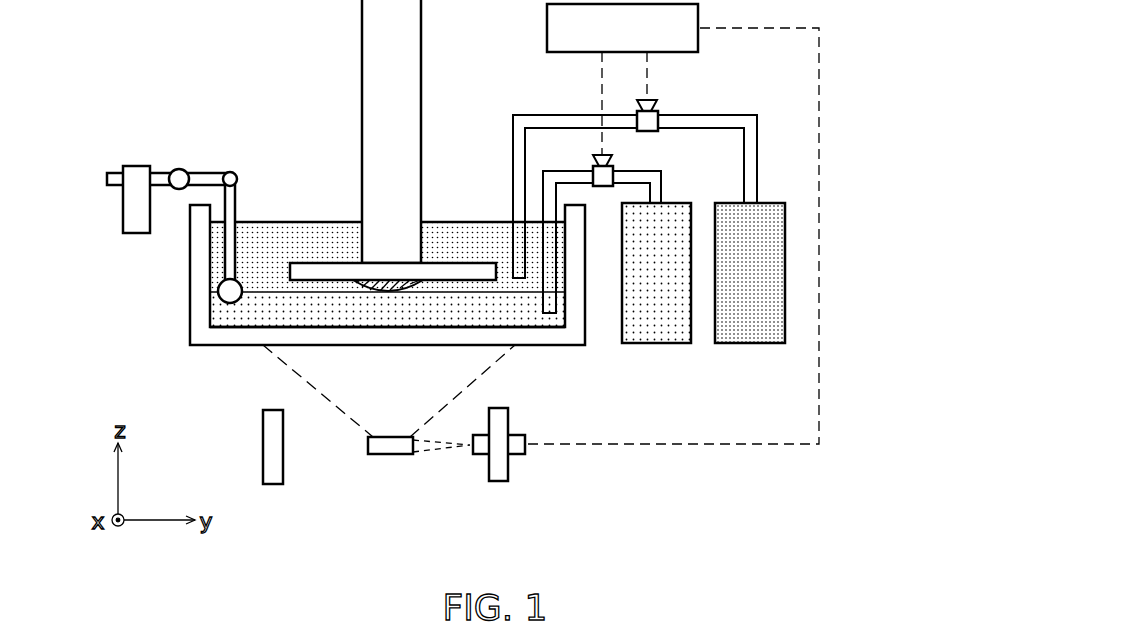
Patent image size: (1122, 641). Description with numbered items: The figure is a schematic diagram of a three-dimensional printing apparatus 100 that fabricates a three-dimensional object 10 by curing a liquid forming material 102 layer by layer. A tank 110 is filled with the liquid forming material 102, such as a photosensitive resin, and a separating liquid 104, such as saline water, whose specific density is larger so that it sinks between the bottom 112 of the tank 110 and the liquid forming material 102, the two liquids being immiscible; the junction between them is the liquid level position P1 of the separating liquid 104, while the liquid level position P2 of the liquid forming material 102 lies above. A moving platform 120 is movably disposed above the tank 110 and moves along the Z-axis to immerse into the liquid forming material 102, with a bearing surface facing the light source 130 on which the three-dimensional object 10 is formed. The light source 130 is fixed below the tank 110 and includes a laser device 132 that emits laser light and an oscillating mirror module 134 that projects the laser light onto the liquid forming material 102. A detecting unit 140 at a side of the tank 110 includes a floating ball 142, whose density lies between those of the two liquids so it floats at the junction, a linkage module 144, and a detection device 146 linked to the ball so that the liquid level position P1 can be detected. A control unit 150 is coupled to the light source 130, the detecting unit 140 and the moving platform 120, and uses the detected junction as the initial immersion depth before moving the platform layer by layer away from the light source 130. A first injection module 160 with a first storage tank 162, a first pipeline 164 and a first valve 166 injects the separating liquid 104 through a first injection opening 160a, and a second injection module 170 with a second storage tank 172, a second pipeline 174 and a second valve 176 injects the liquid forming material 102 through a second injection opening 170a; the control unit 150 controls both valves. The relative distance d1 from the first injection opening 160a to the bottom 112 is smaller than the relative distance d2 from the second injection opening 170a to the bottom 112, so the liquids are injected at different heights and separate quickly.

The three-dimensional object 10 is at (383, 287).
The three-dimensional printing apparatus 100 is at (745, 570).
The liquid forming material 102 is at (305, 232).
The separating liquid 104 is at (258, 298).
The tank 110 is at (200, 320).
The bottom of the tank 112 is at (207, 340).
The moving platform 120 is at (362, 103).
The light source 130 is at (427, 452).
The laser device 132 is at (500, 476).
The oscillating mirror module 134 is at (395, 447).
The detecting unit 140 is at (153, 186).
The floating ball 142 is at (223, 287).
The linkage module 144 is at (204, 175).
The detection device 146 is at (126, 212).
The control unit 150 is at (698, 18).
The first injection module 160 is at (581, 277).
The first injection opening 160a is at (548, 309).
The first storage tank 162 is at (683, 211).
The first pipeline 164 is at (638, 178).
The first valve 166 is at (595, 178).
The second injection module 170 is at (609, 246).
The second injection opening 170a is at (516, 274).
The second storage tank 172 is at (778, 211).
The second pipeline 174 is at (727, 122).
The second valve 176 is at (655, 121).
The liquid level position of the separating liquid P1 is at (207, 292).
The liquid level position of the liquid forming material P2 is at (207, 222).
The relative distance from the first injection opening to the bottom of the tank d1 is at (545, 292).
The relative distance from the second injection opening to the bottom of the tank d2 is at (517, 292).